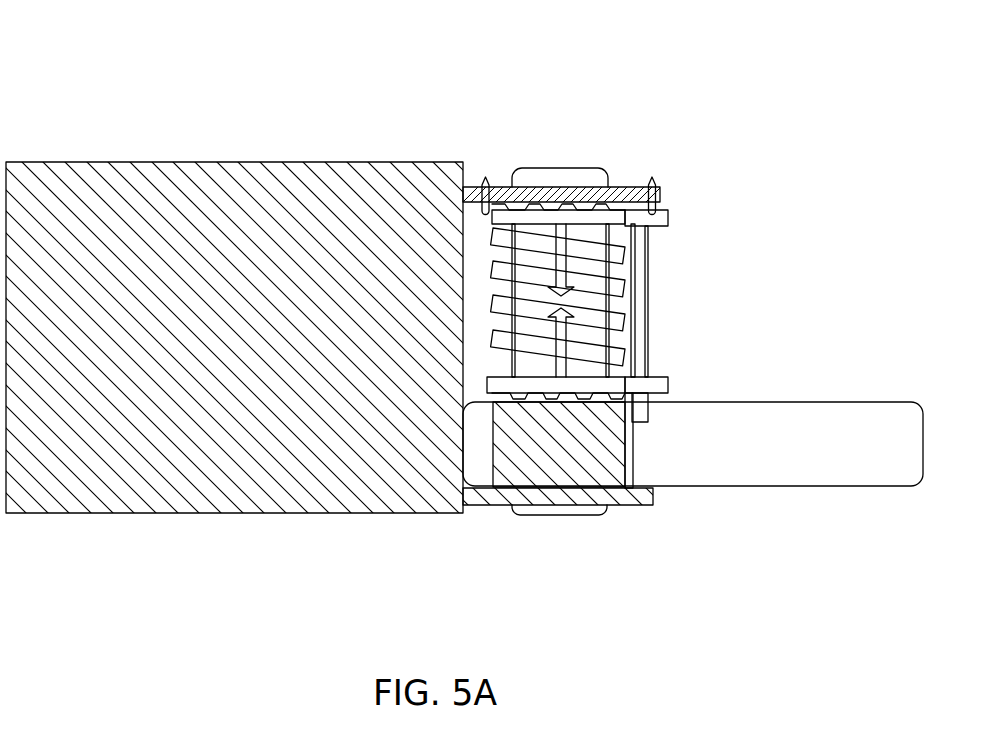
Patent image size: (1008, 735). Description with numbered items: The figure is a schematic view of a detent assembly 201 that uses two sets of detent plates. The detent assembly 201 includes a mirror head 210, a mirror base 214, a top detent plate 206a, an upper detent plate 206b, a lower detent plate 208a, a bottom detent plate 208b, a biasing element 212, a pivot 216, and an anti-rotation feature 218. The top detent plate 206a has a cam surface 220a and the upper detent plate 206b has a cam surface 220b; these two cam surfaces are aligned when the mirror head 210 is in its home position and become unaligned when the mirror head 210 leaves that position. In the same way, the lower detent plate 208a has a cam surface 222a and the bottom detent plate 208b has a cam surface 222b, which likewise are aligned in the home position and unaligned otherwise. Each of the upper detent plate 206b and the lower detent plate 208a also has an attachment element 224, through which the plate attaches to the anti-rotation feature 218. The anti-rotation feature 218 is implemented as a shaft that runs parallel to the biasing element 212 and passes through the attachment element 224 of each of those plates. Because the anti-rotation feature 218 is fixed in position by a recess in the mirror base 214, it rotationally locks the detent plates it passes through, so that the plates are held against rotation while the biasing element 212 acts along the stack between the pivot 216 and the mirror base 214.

The detent assembly 201 is at (147, 60).
The mirror head 210 is at (142, 190).
The pivot 216 is at (555, 177).
The cam surface 220a is at (512, 186).
The cam surface 220b is at (500, 186).
The top detent plate 206a is at (660, 196).
The upper detent plate 206b is at (646, 226).
The attachment element 224 is at (628, 217).
The anti-rotation feature 218 is at (655, 247).
The biasing element 212 is at (612, 326).
The lower detent plate 208a is at (638, 390).
The bottom detent plate 208b is at (640, 400).
The mirror base 214 is at (757, 452).
The cam surface 222a is at (503, 400).
The cam surface 222b is at (518, 403).